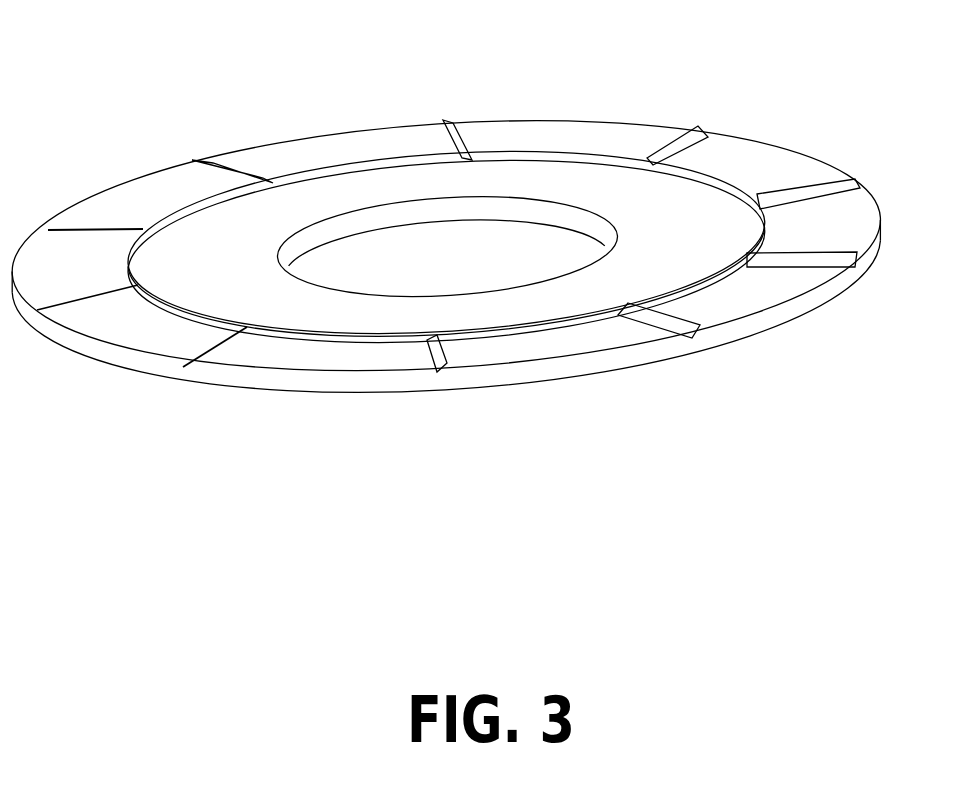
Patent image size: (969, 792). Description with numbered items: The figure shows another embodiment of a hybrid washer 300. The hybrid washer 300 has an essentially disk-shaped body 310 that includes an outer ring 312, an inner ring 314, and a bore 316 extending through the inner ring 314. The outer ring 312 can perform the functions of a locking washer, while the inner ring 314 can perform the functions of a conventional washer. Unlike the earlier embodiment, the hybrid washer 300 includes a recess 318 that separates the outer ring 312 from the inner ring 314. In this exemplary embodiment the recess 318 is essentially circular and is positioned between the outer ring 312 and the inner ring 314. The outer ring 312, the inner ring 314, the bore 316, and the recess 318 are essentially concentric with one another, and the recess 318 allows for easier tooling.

The hybrid washer 300 is at (446, 198).
The body 310 is at (837, 162).
The outer ring 312 is at (447, 153).
The inner ring 314 is at (587, 183).
The bore 316 is at (372, 216).
The recess 318 is at (737, 200).